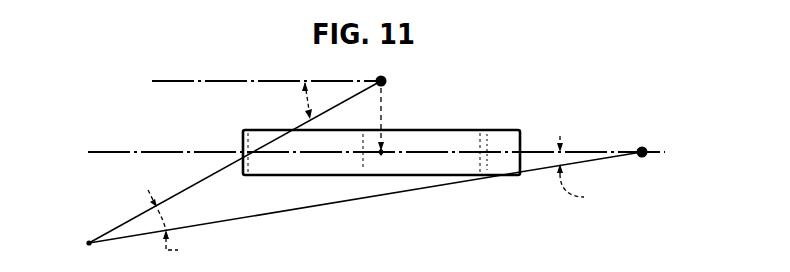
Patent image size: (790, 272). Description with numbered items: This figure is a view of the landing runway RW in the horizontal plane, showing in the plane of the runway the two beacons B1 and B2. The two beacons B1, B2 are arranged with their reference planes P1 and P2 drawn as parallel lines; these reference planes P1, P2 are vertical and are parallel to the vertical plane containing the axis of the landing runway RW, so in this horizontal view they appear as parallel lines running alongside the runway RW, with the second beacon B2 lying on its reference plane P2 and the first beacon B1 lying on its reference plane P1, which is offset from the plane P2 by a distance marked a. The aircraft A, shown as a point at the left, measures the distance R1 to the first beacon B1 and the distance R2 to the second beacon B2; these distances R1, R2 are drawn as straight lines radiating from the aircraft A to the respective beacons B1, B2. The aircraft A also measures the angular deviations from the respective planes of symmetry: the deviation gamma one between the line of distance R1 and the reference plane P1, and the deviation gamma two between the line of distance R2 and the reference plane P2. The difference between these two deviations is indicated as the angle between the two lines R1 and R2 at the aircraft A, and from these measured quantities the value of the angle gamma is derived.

The reference plane of the first beacon P1 is at (190, 82).
The reference plane of the second beacon P2 is at (133, 153).
The distance to the first beacon R1 is at (235, 162).
The distance to the second beacon R2 is at (365, 197).
The aircraft A is at (87, 244).
The first beacon B1 is at (386, 84).
The second beacon B2 is at (644, 147).
The landing runway RW is at (465, 140).
The distance a between B1 and plane P2 a is at (387, 119).